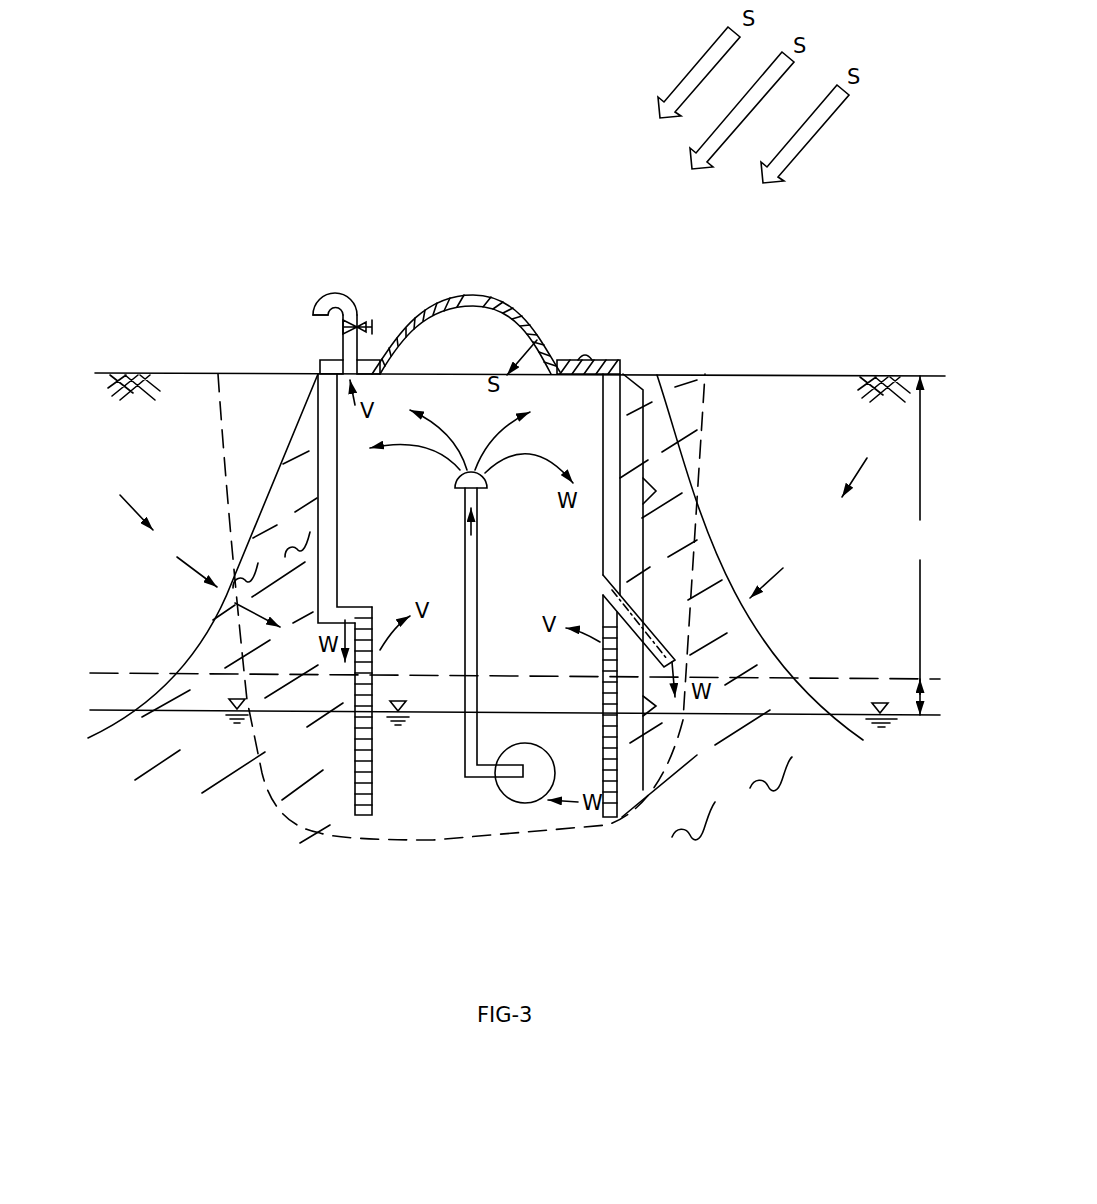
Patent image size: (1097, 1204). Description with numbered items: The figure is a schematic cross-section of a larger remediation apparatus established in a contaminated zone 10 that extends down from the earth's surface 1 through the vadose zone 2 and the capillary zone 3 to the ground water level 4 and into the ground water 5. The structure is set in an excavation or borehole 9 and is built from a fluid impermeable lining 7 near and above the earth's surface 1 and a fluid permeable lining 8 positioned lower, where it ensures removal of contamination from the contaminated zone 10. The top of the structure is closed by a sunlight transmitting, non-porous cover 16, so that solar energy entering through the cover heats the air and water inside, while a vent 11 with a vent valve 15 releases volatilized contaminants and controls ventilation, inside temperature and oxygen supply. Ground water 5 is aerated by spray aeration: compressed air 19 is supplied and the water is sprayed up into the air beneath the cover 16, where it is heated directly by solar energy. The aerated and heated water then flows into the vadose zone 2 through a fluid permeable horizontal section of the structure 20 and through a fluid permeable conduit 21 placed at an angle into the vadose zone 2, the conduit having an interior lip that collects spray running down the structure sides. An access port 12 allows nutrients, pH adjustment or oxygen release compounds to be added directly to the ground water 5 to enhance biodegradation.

The earth's surface 1 is at (135, 369).
The vadose zone 2 is at (918, 535).
The capillary zone 3 is at (922, 692).
The ground water level 4 is at (398, 702).
The ground water 5 is at (732, 798).
The fluid impermeable lining 7 is at (638, 582).
The fluid permeable lining 8 is at (636, 706).
The excavation or borehole 9 is at (758, 412).
The contaminated zone 10 is at (271, 564).
The vent 11 is at (320, 290).
The access port 12 is at (597, 362).
The vent valve 15 is at (378, 318).
The sunlight transmitting, non-porous cover 16 is at (518, 303).
The compressed air 19 is at (540, 763).
The fluid permeable horizontal section of the structure 20 is at (366, 598).
The fluid permeable conduit 21 is at (656, 642).